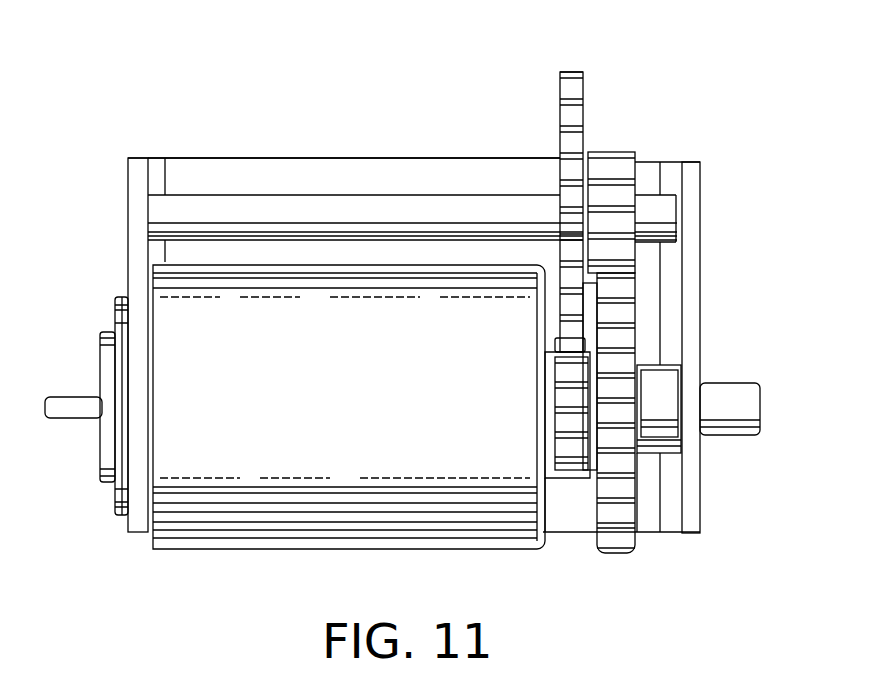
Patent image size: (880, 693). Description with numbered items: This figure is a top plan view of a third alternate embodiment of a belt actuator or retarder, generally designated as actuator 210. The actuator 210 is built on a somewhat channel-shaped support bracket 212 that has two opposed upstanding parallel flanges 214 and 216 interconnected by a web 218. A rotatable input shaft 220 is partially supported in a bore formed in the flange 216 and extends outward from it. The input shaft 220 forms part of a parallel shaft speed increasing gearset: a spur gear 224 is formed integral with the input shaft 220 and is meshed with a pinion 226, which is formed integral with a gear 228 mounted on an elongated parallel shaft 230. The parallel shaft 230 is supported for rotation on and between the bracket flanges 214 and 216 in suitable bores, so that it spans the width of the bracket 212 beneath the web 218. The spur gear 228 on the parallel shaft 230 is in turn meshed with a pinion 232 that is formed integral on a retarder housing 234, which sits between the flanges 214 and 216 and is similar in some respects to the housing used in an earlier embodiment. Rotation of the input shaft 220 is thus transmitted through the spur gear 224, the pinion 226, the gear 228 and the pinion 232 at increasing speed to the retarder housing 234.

The belt actuator 210 is at (378, 124).
The support bracket 212 is at (258, 158).
The flange 214 is at (130, 220).
The flange 216 is at (692, 248).
The web 218 is at (447, 168).
The input shaft 220 is at (738, 383).
The spur gear 224 is at (610, 508).
The pinion 226 is at (620, 152).
The gear 228 is at (576, 72).
The parallel shaft 230 is at (390, 213).
The pinion 232 is at (560, 408).
The retarder housing 234 is at (213, 553).